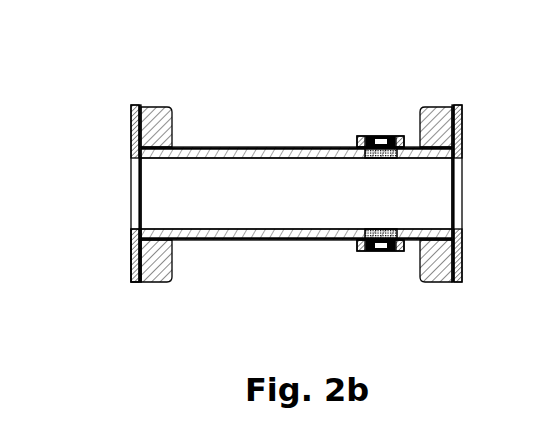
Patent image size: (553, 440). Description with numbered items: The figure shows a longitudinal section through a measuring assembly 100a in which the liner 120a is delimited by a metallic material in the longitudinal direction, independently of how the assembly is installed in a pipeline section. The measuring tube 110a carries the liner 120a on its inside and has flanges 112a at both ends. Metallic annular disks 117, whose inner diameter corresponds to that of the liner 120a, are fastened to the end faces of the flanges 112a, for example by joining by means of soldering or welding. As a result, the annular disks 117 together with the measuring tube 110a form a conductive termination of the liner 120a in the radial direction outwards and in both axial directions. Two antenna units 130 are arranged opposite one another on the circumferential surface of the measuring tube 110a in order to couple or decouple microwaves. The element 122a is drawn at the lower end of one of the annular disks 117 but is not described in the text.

The measuring assembly 100a is at (219, 76).
The measuring tube 110a is at (230, 148).
The liner 120a is at (202, 159).
The flange 112a is at (160, 108).
The metallic annular disk 117 is at (131, 106).
The flange plate 122a is at (138, 283).
The antenna unit 130 is at (368, 135).